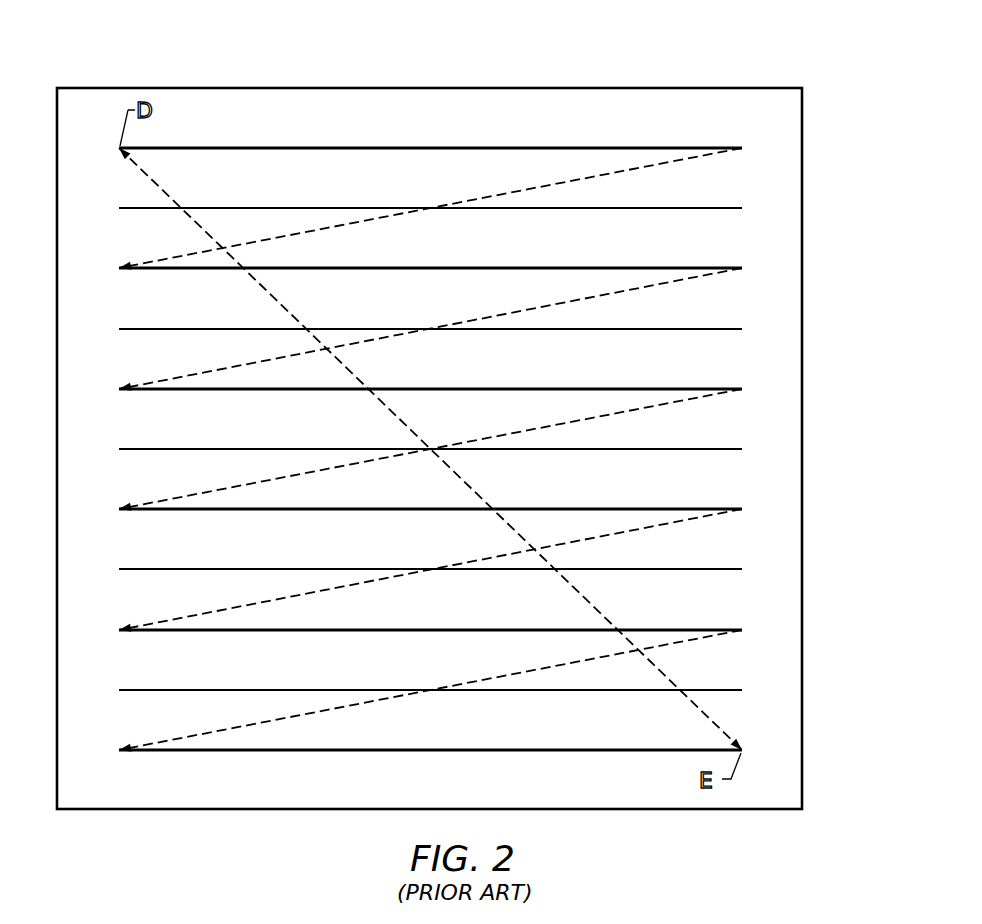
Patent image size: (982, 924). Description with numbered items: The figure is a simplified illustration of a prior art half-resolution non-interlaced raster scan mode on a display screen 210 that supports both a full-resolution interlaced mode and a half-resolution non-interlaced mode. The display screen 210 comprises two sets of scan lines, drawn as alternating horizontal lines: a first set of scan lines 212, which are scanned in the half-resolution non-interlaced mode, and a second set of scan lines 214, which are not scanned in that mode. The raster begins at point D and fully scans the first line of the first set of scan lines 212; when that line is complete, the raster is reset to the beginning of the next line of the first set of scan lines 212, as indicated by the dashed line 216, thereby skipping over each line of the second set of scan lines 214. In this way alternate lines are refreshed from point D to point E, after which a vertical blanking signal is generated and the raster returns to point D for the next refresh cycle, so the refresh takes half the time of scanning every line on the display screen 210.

The display screen 210 is at (275, 87).
The first set of scan lines 212 is at (746, 148).
The second set of scan lines 214 is at (746, 208).
The dashed line 216 is at (305, 232).